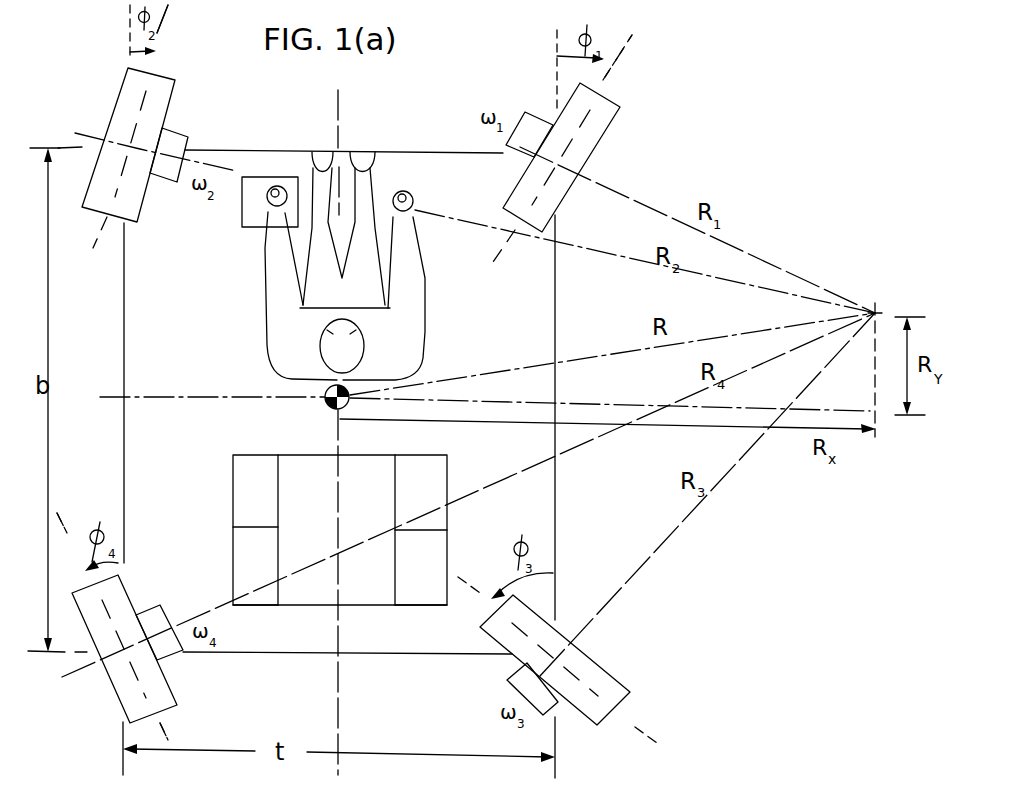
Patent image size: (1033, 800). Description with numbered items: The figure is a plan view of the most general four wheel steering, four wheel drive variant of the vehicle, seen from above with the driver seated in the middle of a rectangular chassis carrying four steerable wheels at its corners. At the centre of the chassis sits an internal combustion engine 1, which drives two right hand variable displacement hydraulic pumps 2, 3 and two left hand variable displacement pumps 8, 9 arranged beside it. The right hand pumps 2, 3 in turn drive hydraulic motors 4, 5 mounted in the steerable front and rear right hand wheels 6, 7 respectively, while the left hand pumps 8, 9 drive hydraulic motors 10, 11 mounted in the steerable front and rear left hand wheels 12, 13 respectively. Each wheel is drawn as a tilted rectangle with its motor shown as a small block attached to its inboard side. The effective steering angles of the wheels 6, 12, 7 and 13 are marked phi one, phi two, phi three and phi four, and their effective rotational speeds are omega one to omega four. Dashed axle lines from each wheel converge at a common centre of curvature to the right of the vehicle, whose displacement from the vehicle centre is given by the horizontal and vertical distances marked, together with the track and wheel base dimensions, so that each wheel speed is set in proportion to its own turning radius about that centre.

The internal combustion engine 1 is at (322, 506).
The right hand variable displacement hydraulic pump 2 is at (423, 506).
The right hand variable displacement hydraulic pump 3 is at (423, 584).
The hydraulic motor 4 is at (537, 145).
The hydraulic motor 5 is at (535, 698).
The front right hand wheel 6 is at (605, 129).
The rear right hand wheel 7 is at (556, 660).
The left hand variable displacement pump 8 is at (260, 506).
The left hand variable displacement pump 9 is at (258, 577).
The hydraulic motor 10 is at (169, 155).
The hydraulic motor 11 is at (172, 645).
The front left hand wheel 12 is at (166, 107).
The rear left hand wheel 13 is at (147, 693).